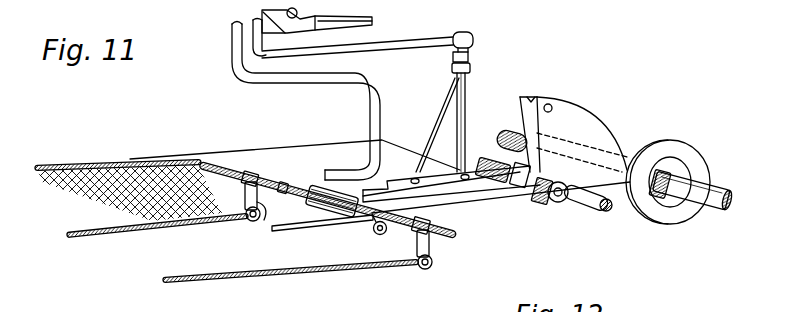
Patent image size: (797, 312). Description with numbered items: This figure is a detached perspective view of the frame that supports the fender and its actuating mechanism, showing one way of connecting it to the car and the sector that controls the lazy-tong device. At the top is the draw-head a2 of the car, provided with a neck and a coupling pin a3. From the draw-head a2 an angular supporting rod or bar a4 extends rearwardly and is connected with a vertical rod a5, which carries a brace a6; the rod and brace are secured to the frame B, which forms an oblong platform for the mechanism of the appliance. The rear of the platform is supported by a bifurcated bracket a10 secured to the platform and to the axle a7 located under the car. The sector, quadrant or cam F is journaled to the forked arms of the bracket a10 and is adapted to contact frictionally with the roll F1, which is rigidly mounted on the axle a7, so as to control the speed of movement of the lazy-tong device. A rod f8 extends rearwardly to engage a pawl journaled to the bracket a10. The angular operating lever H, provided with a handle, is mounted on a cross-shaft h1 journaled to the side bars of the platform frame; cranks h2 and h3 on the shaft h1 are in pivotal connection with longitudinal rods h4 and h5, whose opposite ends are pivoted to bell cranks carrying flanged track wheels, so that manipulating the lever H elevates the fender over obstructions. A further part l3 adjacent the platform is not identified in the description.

The angular operating lever H is at (258, 73).
The draw-head a2 is at (262, 14).
The coupling pin a3 is at (253, 24).
The angular supporting rod or bar a4 is at (403, 34).
The vertical rod a5 is at (466, 93).
The brace a6 is at (441, 118).
The axle a7 is at (730, 208).
The bifurcated bracket a10 is at (503, 197).
The frame B is at (128, 175).
The sector, quadrant or cam F is at (594, 118).
The roll F1 is at (677, 150).
The plate edge l3 is at (245, 157).
The cross-shaft h1 is at (472, 247).
The crank h2 is at (253, 223).
The crank h3 is at (433, 254).
The longitudinal rod h4 is at (168, 227).
The longitudinal rod h5 is at (272, 273).
The rod f8 is at (323, 224).